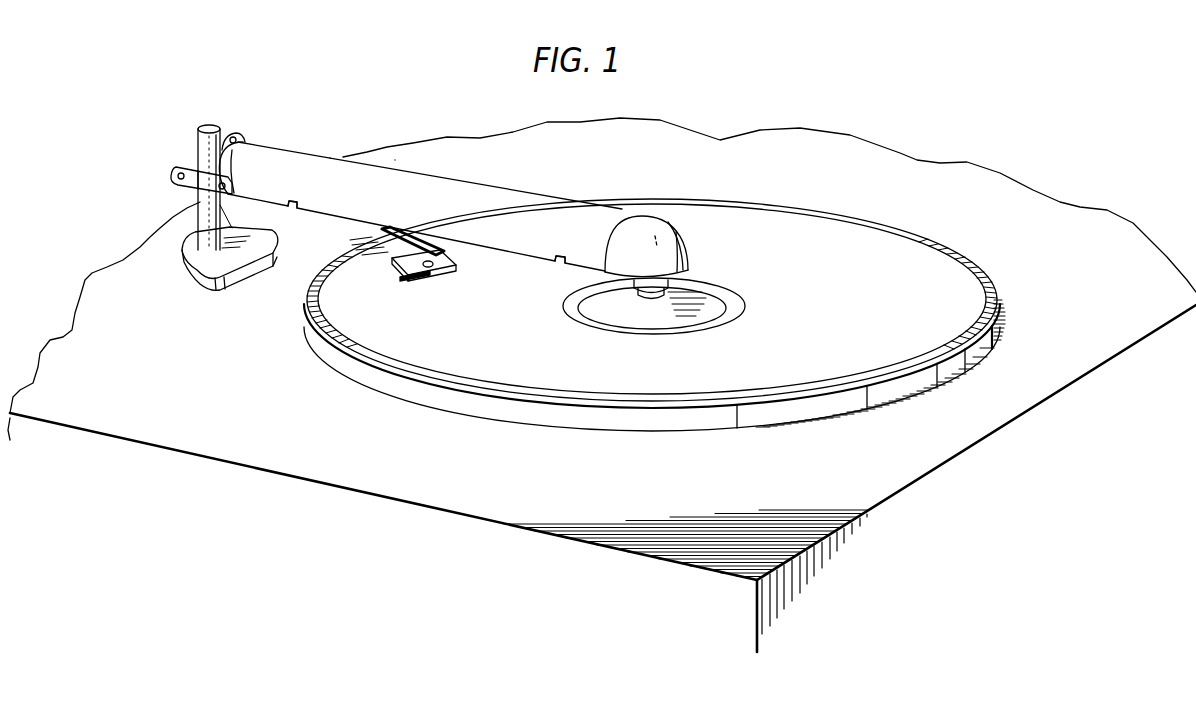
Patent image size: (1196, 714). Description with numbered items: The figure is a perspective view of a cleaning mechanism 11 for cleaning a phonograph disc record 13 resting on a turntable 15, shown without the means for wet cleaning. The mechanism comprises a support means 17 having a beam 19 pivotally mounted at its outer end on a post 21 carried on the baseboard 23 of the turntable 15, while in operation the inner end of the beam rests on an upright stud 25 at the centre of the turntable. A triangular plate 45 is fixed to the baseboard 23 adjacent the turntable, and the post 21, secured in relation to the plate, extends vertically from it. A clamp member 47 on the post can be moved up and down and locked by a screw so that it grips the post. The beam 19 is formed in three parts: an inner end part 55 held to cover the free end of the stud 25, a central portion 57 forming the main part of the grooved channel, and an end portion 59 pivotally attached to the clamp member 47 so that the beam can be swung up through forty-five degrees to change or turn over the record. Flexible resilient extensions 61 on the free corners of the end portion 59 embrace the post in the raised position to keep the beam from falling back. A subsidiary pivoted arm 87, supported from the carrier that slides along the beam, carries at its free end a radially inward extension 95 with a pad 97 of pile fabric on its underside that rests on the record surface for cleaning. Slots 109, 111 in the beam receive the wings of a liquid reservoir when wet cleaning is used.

The cleaning mechanism 11 is at (400, 158).
The phonograph disc record 13 is at (895, 316).
The turntable 15 is at (977, 280).
The support means 17 is at (302, 220).
The beam 19 is at (533, 238).
The post 21 is at (205, 124).
The baseboard 23 is at (140, 395).
The upright stud 25 is at (653, 307).
The triangular plate 45 is at (192, 273).
The clamp member 47 is at (188, 165).
The inner end part 55 is at (643, 233).
The central portion 57 is at (471, 197).
The end portion 59 is at (245, 145).
The flexible resilient extensions 61 is at (233, 137).
The subsidiary pivoted arm 87 is at (387, 260).
The extension 95 is at (415, 270).
The pad 97 is at (445, 281).
The slot 109 is at (292, 208).
The slot 111 is at (557, 265).